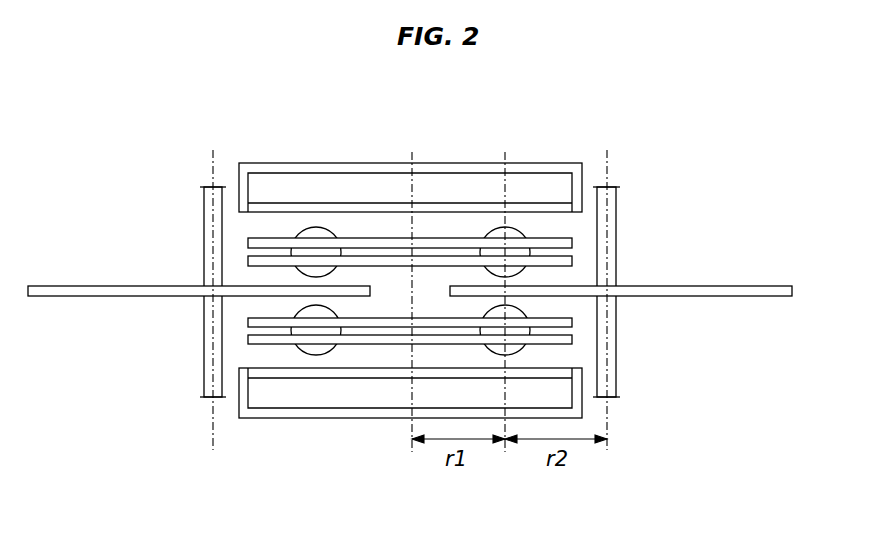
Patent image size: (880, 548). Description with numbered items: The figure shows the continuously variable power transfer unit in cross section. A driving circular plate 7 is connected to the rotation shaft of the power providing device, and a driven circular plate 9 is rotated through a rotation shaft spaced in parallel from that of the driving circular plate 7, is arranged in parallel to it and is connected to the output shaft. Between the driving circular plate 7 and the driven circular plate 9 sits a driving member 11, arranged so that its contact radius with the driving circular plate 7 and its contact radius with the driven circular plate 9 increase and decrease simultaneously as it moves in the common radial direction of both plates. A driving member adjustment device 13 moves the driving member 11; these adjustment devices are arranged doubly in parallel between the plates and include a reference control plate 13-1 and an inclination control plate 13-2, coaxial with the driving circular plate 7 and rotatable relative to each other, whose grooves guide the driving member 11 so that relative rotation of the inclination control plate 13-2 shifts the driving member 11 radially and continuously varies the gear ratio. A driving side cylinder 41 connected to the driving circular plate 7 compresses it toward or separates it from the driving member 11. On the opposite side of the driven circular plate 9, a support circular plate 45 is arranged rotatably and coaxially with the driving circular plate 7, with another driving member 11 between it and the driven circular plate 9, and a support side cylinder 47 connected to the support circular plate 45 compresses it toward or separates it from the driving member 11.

The driving circular plate 7 is at (373, 378).
The driven circular plate 9 is at (122, 297).
The driving member 11 is at (316, 230).
The driving member adjustment device 13 is at (517, 273).
The reference control plate 13-1 is at (572, 241).
The inclination control plate 13-2 is at (572, 262).
The driving side cylinder 41 is at (275, 398).
The support circular plate 45 is at (287, 205).
The support side cylinder 47 is at (455, 185).